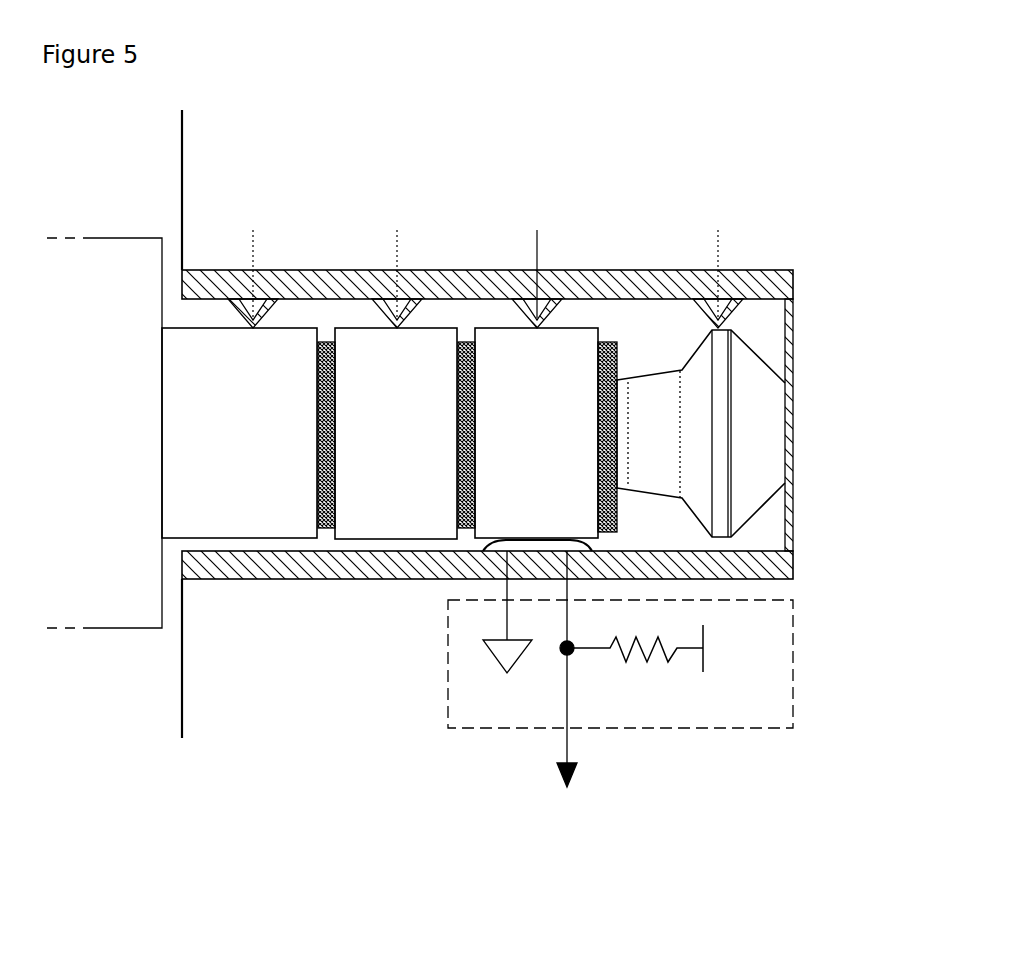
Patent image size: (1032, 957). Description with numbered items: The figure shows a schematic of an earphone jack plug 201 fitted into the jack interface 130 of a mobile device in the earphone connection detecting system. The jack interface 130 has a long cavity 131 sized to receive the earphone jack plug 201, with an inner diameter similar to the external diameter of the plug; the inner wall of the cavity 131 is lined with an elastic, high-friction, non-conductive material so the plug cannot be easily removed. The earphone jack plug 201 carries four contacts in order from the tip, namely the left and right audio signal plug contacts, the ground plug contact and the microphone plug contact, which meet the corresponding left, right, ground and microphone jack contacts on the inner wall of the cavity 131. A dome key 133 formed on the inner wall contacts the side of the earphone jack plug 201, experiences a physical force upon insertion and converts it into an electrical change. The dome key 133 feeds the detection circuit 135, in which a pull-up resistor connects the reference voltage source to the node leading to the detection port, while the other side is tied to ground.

The jack interface 130 is at (828, 245).
The cavity 131 is at (252, 581).
The dome key 133 is at (492, 546).
The detection circuit 135 is at (795, 662).
The earphone jack plug 201 is at (157, 438).